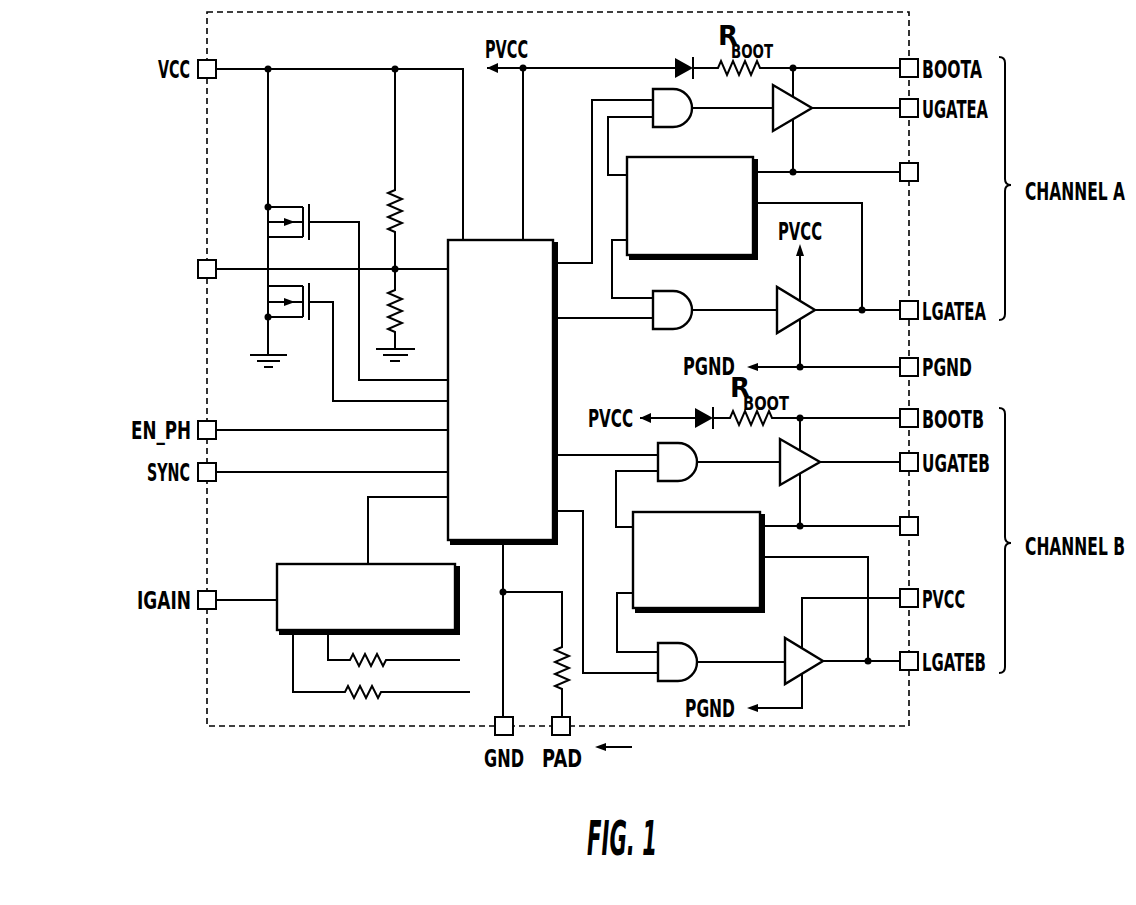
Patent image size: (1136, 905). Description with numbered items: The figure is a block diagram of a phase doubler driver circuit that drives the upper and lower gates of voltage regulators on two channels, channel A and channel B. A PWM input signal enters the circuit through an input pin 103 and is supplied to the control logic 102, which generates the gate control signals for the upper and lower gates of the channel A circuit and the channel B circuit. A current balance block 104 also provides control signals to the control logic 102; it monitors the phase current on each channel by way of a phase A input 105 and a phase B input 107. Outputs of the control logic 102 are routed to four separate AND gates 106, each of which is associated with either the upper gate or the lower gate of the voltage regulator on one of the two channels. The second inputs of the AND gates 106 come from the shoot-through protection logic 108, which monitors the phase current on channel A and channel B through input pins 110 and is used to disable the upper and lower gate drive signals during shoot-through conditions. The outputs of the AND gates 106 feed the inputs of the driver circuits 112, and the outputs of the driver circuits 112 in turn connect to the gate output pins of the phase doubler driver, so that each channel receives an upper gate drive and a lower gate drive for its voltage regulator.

The control logic 102 is at (448, 448).
The input pin 103 is at (207, 279).
The current balance block 104 is at (301, 578).
The phase A input 105 is at (453, 632).
The AND gates 106 is at (689, 127).
The phase B input 107 is at (418, 693).
The shoot-through protection logic 108 is at (690, 257).
The input pins 110 is at (915, 182).
The driver circuits 112 is at (797, 118).